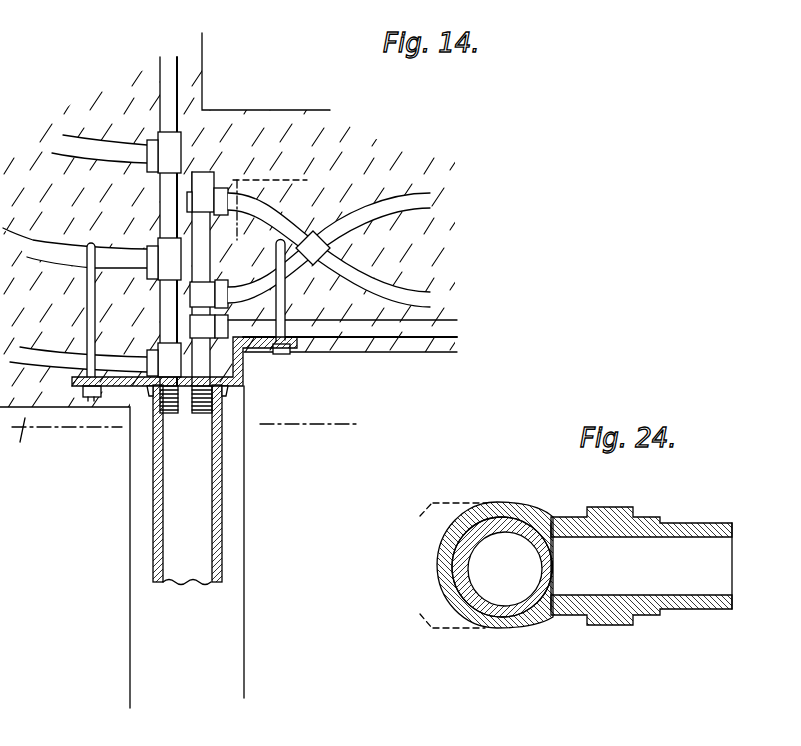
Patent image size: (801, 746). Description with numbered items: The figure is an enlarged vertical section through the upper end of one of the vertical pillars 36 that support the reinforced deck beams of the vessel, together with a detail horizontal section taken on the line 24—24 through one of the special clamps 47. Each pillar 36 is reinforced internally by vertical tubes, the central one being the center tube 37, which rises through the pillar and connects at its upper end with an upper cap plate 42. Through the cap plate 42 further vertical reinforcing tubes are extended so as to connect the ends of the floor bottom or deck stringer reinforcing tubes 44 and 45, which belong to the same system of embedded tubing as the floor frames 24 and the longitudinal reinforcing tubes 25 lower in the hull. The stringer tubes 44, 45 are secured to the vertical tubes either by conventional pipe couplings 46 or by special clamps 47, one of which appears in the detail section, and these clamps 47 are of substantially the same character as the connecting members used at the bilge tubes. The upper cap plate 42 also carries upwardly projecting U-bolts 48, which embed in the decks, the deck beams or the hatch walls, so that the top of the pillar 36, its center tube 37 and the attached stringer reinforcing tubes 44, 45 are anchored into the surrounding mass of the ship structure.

In FIG. 14, the floor frame 24 is at (160, 200).
In FIG. 14, the longitudinal reinforcing tube 25 is at (192, 427).
In FIG. 14, the vertical pillar 36 is at (245, 601).
In FIG. 14, the center tube 37 is at (208, 531).
In FIG. 14, the upper cap plate 42 is at (244, 378).
In FIG. 14, the deck stringer reinforcing tube 44 is at (391, 191).
In FIG. 24, the deck stringer reinforcing tube 44 is at (716, 568).
In FIG. 14, the deck stringer reinforcing tube 45 is at (197, 172).
In FIG. 24, the deck stringer reinforcing tube 45 is at (482, 582).
In FIG. 14, the pipe coupling 46 is at (162, 268).
In FIG. 14, the special clamp 47 is at (201, 291).
In FIG. 24, the special clamp 47 is at (526, 623).
In FIG. 14, the U-bolt 48 is at (343, 362).